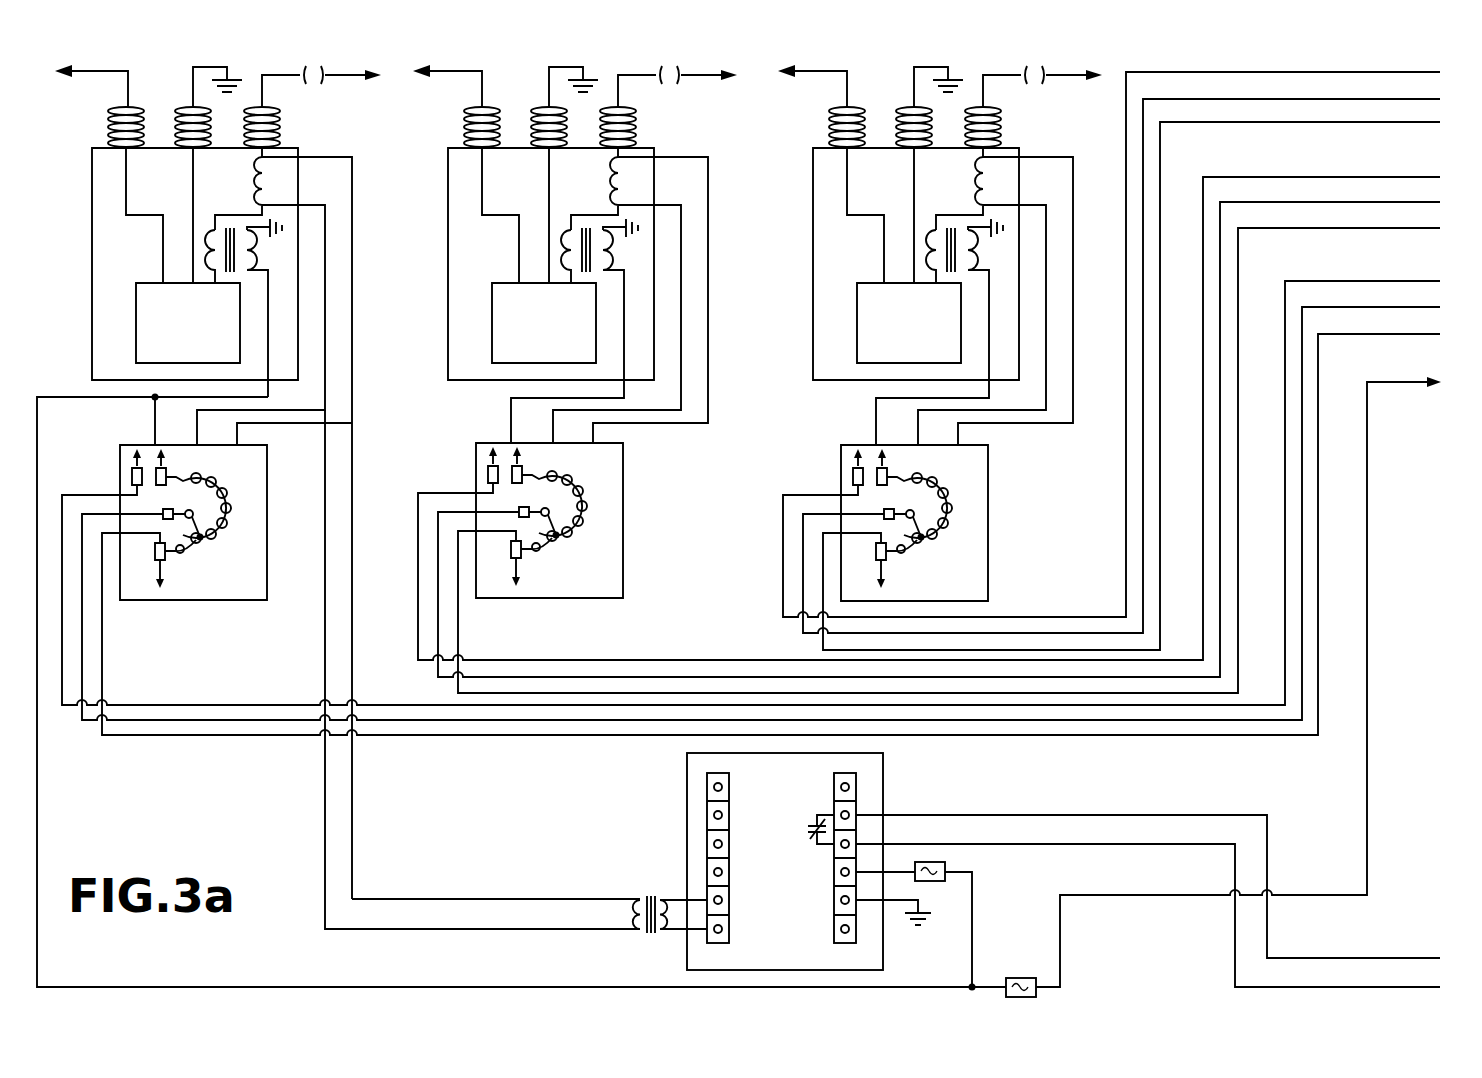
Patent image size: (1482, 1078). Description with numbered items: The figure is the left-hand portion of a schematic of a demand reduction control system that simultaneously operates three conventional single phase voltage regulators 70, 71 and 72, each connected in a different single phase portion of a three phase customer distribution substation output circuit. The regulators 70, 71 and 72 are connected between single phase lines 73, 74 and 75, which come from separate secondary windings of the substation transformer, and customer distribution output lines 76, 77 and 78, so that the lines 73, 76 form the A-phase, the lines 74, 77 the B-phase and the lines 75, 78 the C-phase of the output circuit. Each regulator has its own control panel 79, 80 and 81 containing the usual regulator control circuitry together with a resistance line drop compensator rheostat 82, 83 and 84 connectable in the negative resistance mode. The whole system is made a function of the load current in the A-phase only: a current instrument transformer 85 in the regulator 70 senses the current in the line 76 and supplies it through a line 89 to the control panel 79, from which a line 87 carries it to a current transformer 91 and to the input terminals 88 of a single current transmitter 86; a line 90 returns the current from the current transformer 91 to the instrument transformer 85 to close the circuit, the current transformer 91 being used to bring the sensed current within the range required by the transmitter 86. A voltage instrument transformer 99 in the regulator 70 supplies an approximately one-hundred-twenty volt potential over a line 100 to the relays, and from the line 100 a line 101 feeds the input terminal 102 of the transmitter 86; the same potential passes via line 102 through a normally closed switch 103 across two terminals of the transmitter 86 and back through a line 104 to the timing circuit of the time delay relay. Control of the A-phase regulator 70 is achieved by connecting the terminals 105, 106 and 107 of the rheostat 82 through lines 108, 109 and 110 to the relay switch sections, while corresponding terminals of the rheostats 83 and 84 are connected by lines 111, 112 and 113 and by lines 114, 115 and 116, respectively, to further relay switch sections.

The single phase voltage regulator 70 is at (282, 302).
The single phase voltage regulator 71 is at (642, 327).
The single phase voltage regulator 72 is at (1004, 307).
The single phase line 73 is at (104, 76).
The single phase line 74 is at (456, 73).
The single phase line 75 is at (822, 73).
The customer distribution output line 76 is at (348, 78).
The customer distribution output line 77 is at (703, 78).
The customer distribution output line 78 is at (1075, 78).
The control panel 79 is at (252, 497).
The control panel 80 is at (607, 547).
The control panel 81 is at (970, 547).
The resistance line drop compensator rheostat 82 is at (201, 543).
The resistance line drop compensator rheostat 83 is at (586, 500).
The resistance line drop compensator rheostat 84 is at (946, 520).
The current instrument transformer 85 is at (271, 187).
The current transmitter 86 is at (889, 786).
The line 87 is at (326, 535).
The input terminals 88 is at (733, 901).
The line 89 is at (327, 353).
The line 90 is at (418, 899).
The current transformer 91 is at (653, 897).
The voltage instrument transformer 99 is at (251, 273).
The line 100 is at (190, 397).
The line 101 is at (972, 940).
The 120 volt input terminal 102 is at (834, 872).
The normally closed switch 103 is at (808, 829).
The line 104 is at (1358, 987).
The terminal 105 is at (163, 514).
The terminal 106 is at (155, 552).
The terminal 107 is at (132, 476).
The line 108 is at (212, 720).
The line 109 is at (215, 735).
The line 110 is at (184, 705).
The line 111 is at (486, 672).
The line 112 is at (466, 693).
The line 113 is at (442, 493).
The line 114 is at (803, 594).
The line 115 is at (834, 650).
The line 116 is at (820, 497).